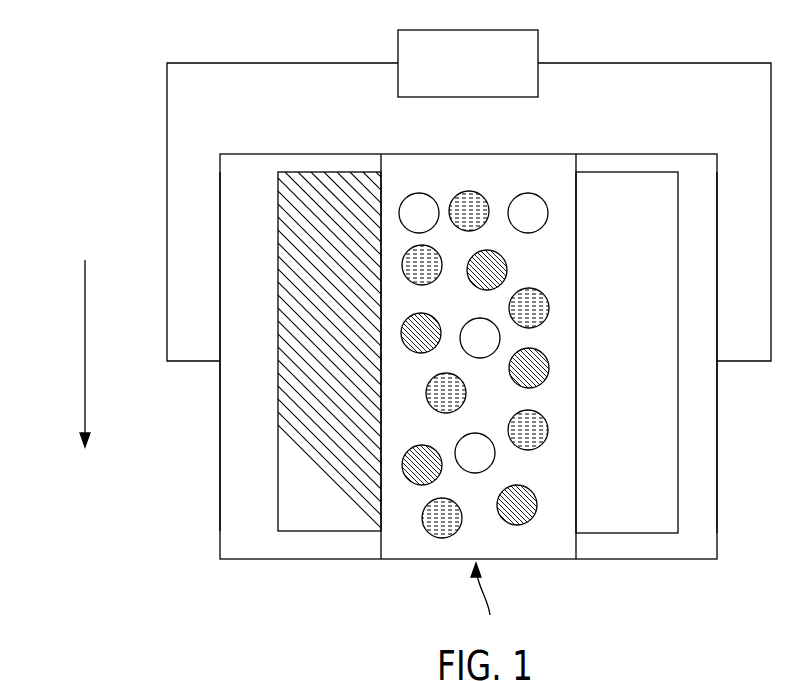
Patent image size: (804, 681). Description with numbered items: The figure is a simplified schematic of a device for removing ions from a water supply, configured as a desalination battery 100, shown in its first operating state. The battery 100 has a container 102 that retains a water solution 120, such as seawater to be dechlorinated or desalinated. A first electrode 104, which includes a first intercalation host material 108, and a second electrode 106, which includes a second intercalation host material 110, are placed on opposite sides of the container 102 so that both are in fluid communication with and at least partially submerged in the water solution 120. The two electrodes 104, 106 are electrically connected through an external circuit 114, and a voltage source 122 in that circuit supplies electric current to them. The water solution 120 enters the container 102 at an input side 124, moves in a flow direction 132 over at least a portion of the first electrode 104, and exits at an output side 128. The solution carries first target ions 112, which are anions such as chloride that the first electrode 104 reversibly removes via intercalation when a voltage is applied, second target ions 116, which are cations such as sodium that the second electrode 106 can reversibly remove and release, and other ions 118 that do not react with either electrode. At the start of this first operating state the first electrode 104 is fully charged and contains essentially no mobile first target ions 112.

The desalination battery 100 is at (118, 135).
The container 102 is at (240, 560).
The first electrode 104 is at (688, 256).
The second electrode 106 is at (268, 392).
The first intercalation host material 108 is at (655, 475).
The second intercalation host material 110 is at (320, 515).
The first target ions 112 is at (548, 422).
The external circuit 114 is at (275, 63).
The second target ions 116 is at (397, 336).
The other ions 118 is at (532, 193).
The water solution 120 is at (473, 170).
The voltage source 122 is at (538, 78).
The input side 124 is at (407, 142).
The output side 128 is at (488, 605).
The flow direction 132 is at (85, 355).